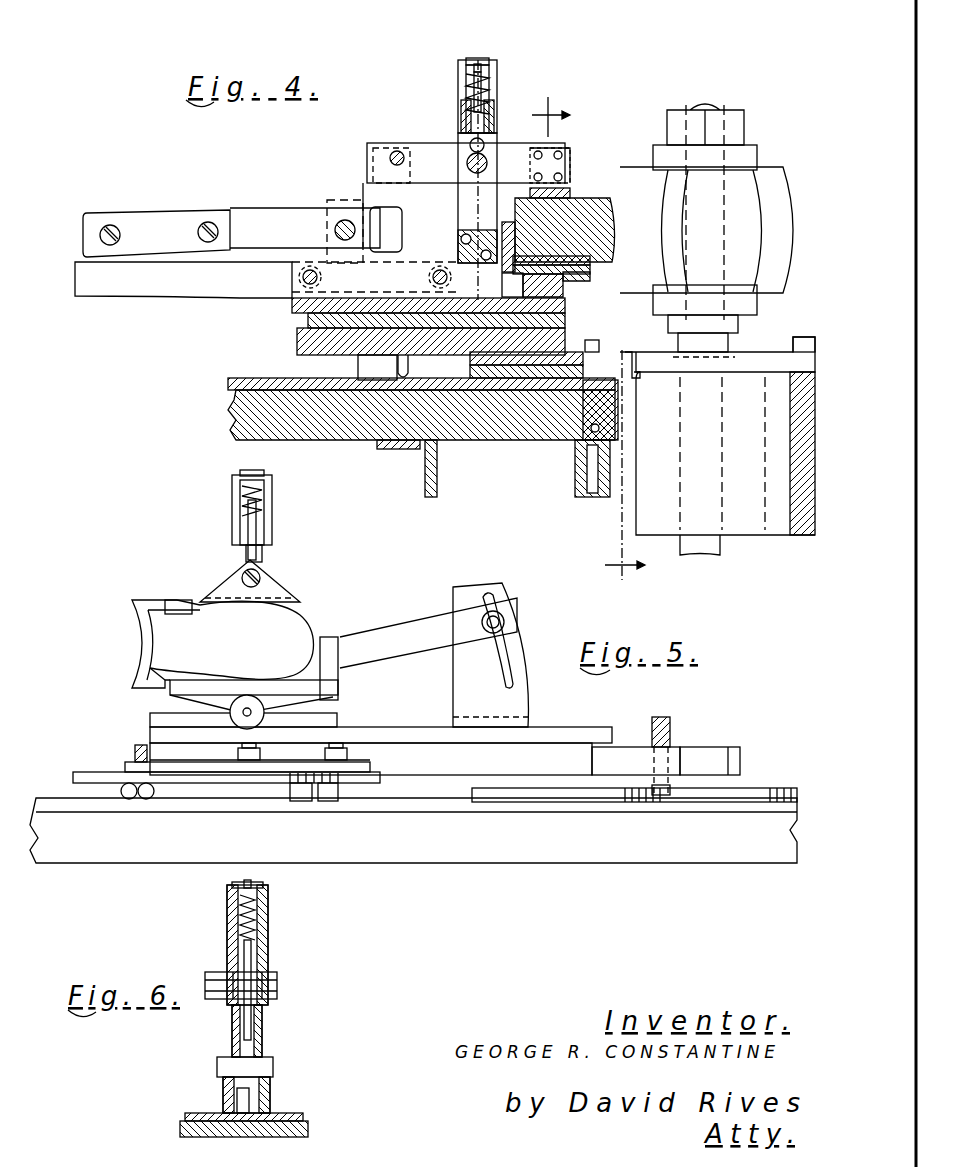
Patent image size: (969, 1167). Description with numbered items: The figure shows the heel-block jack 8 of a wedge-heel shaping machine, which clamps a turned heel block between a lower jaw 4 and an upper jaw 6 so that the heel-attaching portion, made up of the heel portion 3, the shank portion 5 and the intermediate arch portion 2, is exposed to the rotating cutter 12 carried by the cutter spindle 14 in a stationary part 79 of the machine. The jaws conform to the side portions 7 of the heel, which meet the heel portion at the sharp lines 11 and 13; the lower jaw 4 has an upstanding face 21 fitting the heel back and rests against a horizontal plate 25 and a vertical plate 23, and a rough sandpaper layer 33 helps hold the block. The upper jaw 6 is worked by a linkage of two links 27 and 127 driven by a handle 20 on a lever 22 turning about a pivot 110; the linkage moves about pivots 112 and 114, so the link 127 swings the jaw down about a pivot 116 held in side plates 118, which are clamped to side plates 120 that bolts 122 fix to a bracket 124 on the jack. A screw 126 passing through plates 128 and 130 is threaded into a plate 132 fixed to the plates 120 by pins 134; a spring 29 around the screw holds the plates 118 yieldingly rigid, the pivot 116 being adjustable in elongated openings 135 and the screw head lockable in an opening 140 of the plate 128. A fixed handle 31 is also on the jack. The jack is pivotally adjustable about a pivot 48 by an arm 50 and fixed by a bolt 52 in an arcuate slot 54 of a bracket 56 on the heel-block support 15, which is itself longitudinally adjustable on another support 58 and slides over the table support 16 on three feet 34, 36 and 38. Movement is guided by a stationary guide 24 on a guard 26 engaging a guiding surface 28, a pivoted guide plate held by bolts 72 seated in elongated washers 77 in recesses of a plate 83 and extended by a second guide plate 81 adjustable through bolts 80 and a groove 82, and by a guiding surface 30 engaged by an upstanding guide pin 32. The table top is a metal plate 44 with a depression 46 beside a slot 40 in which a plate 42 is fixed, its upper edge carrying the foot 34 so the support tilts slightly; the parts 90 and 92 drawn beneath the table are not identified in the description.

In FIG. 5, the intermediate or arch portion 2 is at (220, 645).
In FIG. 4, the heel portion 3 is at (555, 258).
In FIG. 5, the heel portion 3 is at (290, 585).
In FIG. 4, the lower jaw 4 is at (555, 195).
In FIG. 5, the lower jaw 4 is at (318, 632).
In FIG. 5, the shank portion 5 is at (145, 640).
In FIG. 4, the upper jaw 6 is at (548, 165).
In FIG. 5, the upper jaw 6 is at (270, 625).
In FIG. 4, the side portion 7 is at (590, 305).
In FIG. 5, the side portion 7 is at (205, 605).
In FIG. 4, the wood-heel-block jack 8 is at (292, 305).
In FIG. 5, the wood-heel-block jack 8 is at (326, 604).
In FIG. 6, the wood-heel-block jack 8 is at (180, 1130).
In FIG. 4, the sharp line 11 is at (615, 180).
In FIG. 4, the cutter 12 is at (780, 200).
In FIG. 4, the sharp line 13 is at (605, 262).
In FIG. 4, the cutter spindle 14 is at (738, 326).
In FIG. 4, the heel-block support 15 is at (310, 320).
In FIG. 5, the heel-block support 15 is at (400, 740).
In FIG. 4, the table support 16 is at (236, 415).
In FIG. 5, the table support 16 is at (452, 863).
In FIG. 4, the handle 20 is at (130, 222).
In FIG. 5, the upstanding face 21 is at (335, 620).
In FIG. 4, the lever 22 is at (262, 222).
In FIG. 4, the vertical plate 23 is at (500, 240).
In FIG. 5, the vertical plate 23 is at (340, 640).
In FIG. 4, the stationary guide 24 is at (632, 375).
In FIG. 4, the horizontal plate 25 is at (640, 205).
In FIG. 5, the horizontal plate 25 is at (325, 686).
In FIG. 4, the guard 26 is at (660, 362).
In FIG. 4, the link 27 is at (400, 143).
In FIG. 5, the link 27 is at (246, 553).
In FIG. 6, the link 27 is at (262, 1025).
In FIG. 4, the guiding surface 28 is at (410, 365).
In FIG. 4, the spring 29 is at (495, 80).
In FIG. 5, the spring 29 is at (272, 505).
In FIG. 6, the spring 29 is at (268, 918).
In FIG. 5, the stationary guiding surface 30 is at (758, 795).
In FIG. 4, the handle 31 is at (108, 290).
In FIG. 6, the handle 31 is at (270, 1100).
In FIG. 4, the projecting guide 32 is at (510, 370).
In FIG. 5, the projecting guide 32 is at (672, 722).
In FIG. 4, the rough layer 33 is at (540, 255).
In FIG. 5, the foot 34 is at (130, 793).
In FIG. 4, the foot 36 is at (358, 366).
In FIG. 5, the foot 36 is at (320, 800).
In FIG. 5, the foot 38 is at (620, 785).
In FIG. 4, the slot 40 is at (598, 428).
In FIG. 4, the plate 42 is at (590, 497).
In FIG. 4, the metal plate 44 is at (230, 384).
In FIG. 5, the metal plate 44 is at (62, 800).
In FIG. 4, the depression 46 is at (520, 420).
In FIG. 4, the pivot 48 is at (612, 290).
In FIG. 5, the pivot 48 is at (250, 708).
In FIG. 5, the arm 50 is at (385, 632).
In FIG. 5, the bolt 52 is at (505, 622).
In FIG. 5, the arcuate slot 54 is at (510, 660).
In FIG. 5, the bracket 56 is at (458, 670).
In FIG. 4, the support 58 is at (310, 345).
In FIG. 5, the support 58 is at (555, 757).
In FIG. 4, the bolt 72 is at (470, 440).
In FIG. 4, the elongated washer 77 is at (395, 450).
In FIG. 4, the stationary part 79 is at (808, 337).
In FIG. 4, the bolt 80 is at (600, 344).
In FIG. 5, the bolt 80 is at (262, 754).
In FIG. 4, the second guide plate 81 is at (700, 347).
In FIG. 5, the groove 82 is at (225, 775).
In FIG. 4, the plate 83 is at (440, 375).
In FIG. 4, the leg 90 is at (425, 492).
In FIG. 4, the leg 92 is at (576, 485).
In FIG. 4, the pivot 110 is at (345, 225).
In FIG. 4, the pivot 112 is at (374, 277).
In FIG. 4, the pivot 114 is at (380, 143).
In FIG. 4, the pivot 116 is at (468, 158).
In FIG. 6, the pivot 116 is at (278, 978).
In FIG. 5, the side plates 118 is at (233, 515).
In FIG. 6, the side plates 118 is at (232, 921).
In FIG. 4, the side plates 120 is at (458, 205).
In FIG. 5, the side plates 120 is at (240, 530).
In FIG. 6, the side plates 120 is at (232, 1026).
In FIG. 4, the bolts 122 is at (462, 246).
In FIG. 6, the bolts 122 is at (273, 1067).
In FIG. 4, the bracket 124 is at (290, 252).
In FIG. 6, the bracket 124 is at (225, 1098).
In FIG. 4, the screw 126 is at (480, 58).
In FIG. 5, the screw 126 is at (252, 470).
In FIG. 6, the screw 126 is at (232, 884).
In FIG. 4, the link 127 is at (365, 185).
In FIG. 4, the plate 128 is at (464, 65).
In FIG. 5, the plate 128 is at (232, 478).
In FIG. 6, the plate 128 is at (232, 892).
In FIG. 4, the plate 130 is at (460, 68).
In FIG. 5, the plate 130 is at (240, 490).
In FIG. 6, the plate 130 is at (262, 893).
In FIG. 4, the plate 132 is at (492, 84).
In FIG. 5, the plate 132 is at (257, 518).
In FIG. 6, the plate 132 is at (252, 945).
In FIG. 4, the pins 134 is at (462, 102).
In FIG. 6, the pins 134 is at (230, 948).
In FIG. 4, the elongated openings 135 is at (495, 118).
In FIG. 6, the elongated openings 135 is at (232, 968).
In FIG. 4, the opening 140 is at (482, 66).
In FIG. 6, the opening 140 is at (252, 884).